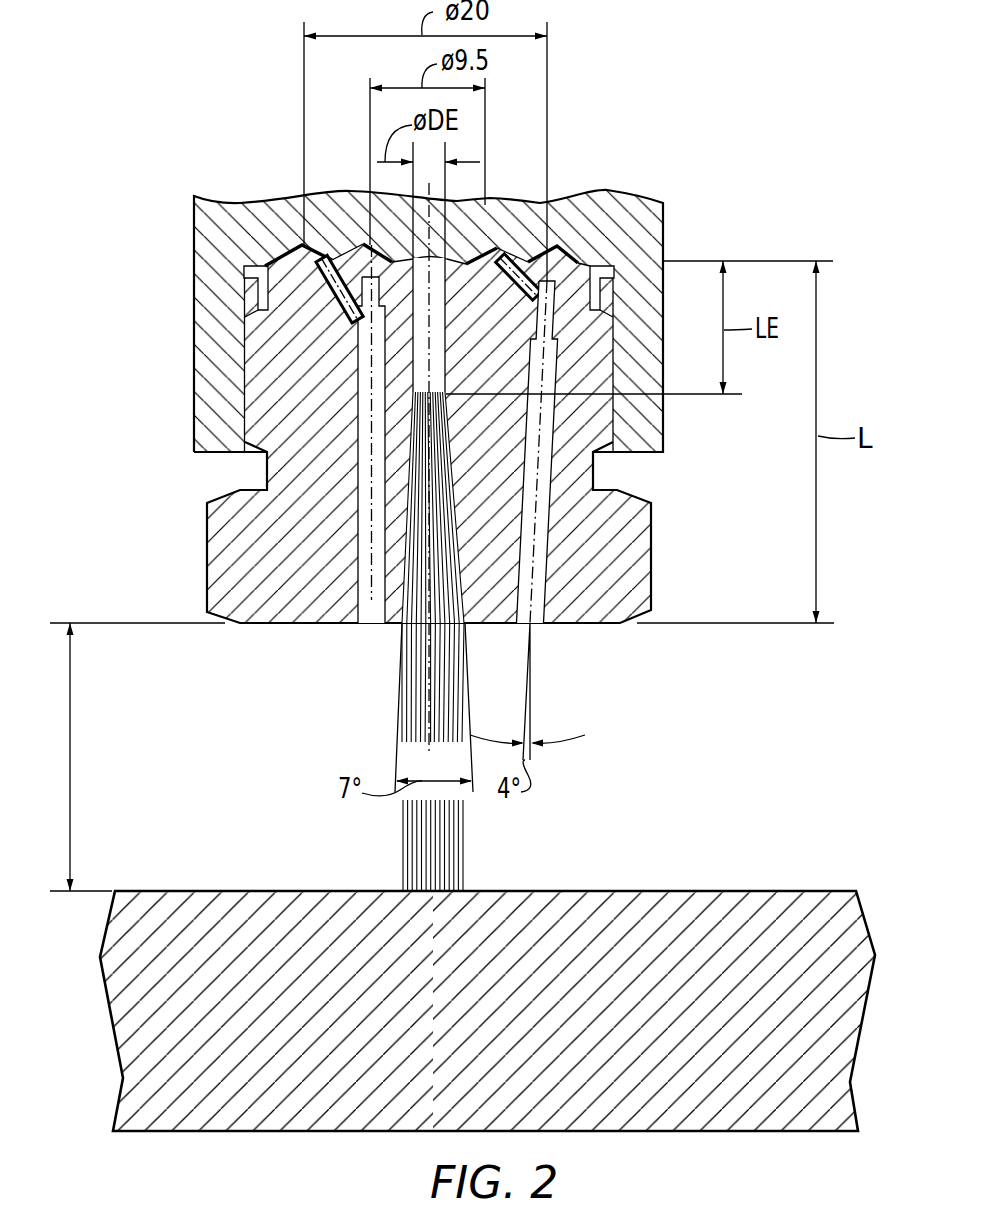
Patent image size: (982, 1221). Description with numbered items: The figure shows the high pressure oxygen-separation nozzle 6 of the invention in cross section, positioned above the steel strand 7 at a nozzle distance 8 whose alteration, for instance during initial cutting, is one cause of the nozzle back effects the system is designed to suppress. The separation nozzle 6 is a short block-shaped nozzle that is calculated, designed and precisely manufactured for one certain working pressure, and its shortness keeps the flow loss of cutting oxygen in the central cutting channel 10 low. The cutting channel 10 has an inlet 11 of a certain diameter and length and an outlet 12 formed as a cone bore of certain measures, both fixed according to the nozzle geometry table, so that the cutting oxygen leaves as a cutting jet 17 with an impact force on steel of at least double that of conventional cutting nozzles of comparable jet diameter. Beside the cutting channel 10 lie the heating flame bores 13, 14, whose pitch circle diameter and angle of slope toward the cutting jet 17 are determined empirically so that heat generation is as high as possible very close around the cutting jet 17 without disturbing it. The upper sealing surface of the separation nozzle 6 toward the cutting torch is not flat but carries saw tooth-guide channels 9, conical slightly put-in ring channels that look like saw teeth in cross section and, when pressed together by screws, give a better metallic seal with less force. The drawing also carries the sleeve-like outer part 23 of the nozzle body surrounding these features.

The separation nozzle 6 is at (232, 571).
The strand 7 is at (122, 1008).
The nozzle distance 8 is at (73, 750).
The saw tooth-guide channels 9 is at (532, 262).
The cutting channel 10 is at (418, 372).
The inlet 11 is at (522, 250).
The outlet 12 is at (430, 650).
The heating flame bore 13 is at (537, 553).
The heating flame bore 14 is at (372, 522).
The cutting jet 17 is at (448, 845).
The outer sleeve 23 is at (215, 233).